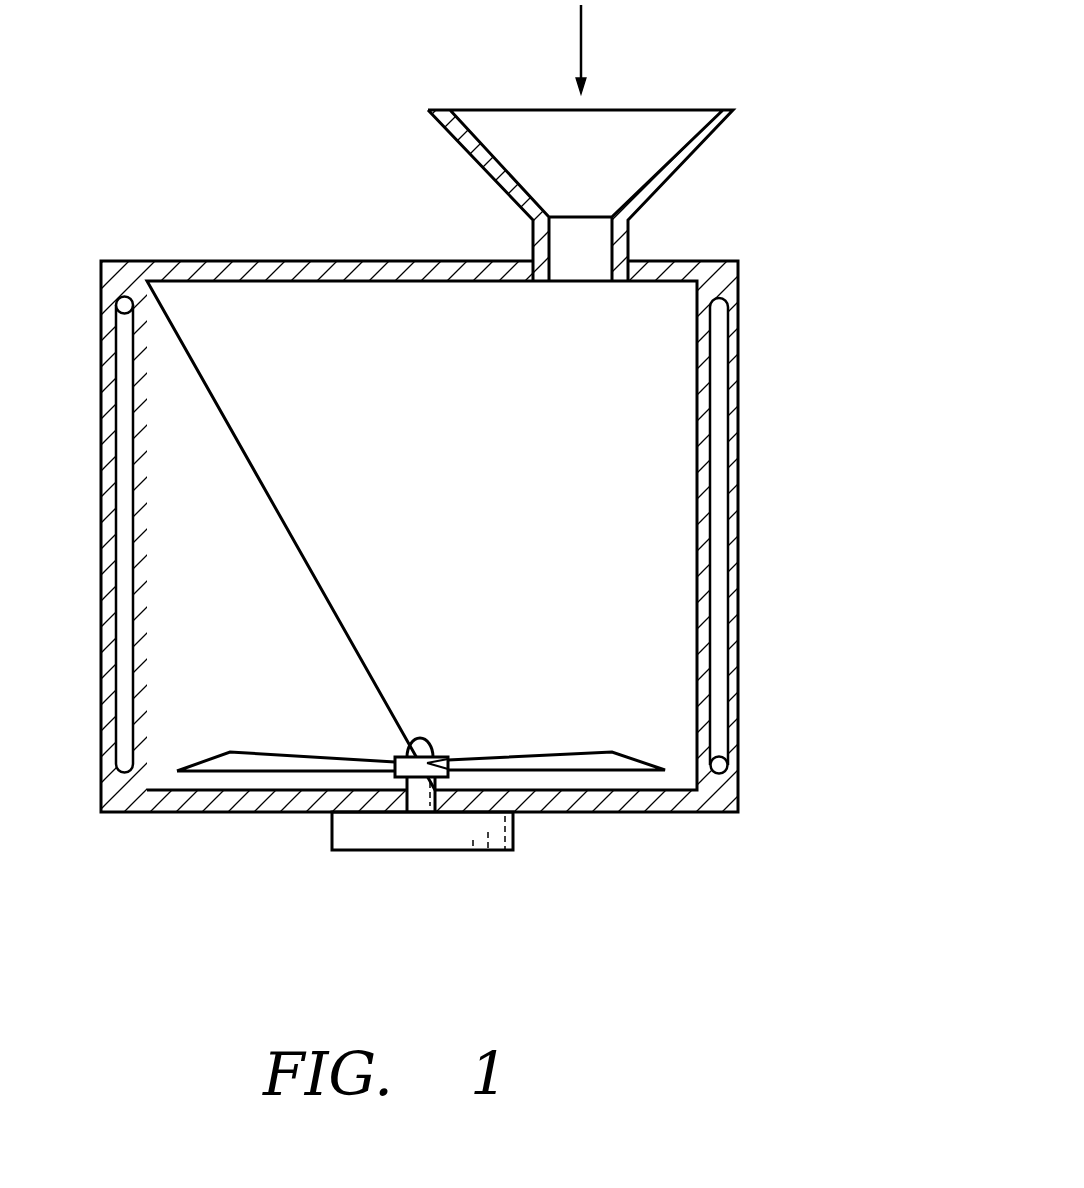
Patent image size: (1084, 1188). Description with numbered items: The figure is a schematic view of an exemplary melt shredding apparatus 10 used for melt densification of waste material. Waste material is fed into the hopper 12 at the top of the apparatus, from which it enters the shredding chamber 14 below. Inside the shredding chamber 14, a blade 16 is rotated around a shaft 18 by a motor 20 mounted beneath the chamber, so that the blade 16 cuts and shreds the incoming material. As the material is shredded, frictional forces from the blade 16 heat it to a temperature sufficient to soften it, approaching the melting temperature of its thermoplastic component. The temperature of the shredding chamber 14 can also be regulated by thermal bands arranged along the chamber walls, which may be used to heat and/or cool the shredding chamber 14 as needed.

The melt shredding apparatus 10 is at (226, 163).
The hopper 12 is at (637, 127).
The shredding chamber 14 is at (652, 447).
The blade 16 is at (525, 752).
The shaft 18 is at (418, 796).
The motor 20 is at (442, 832).